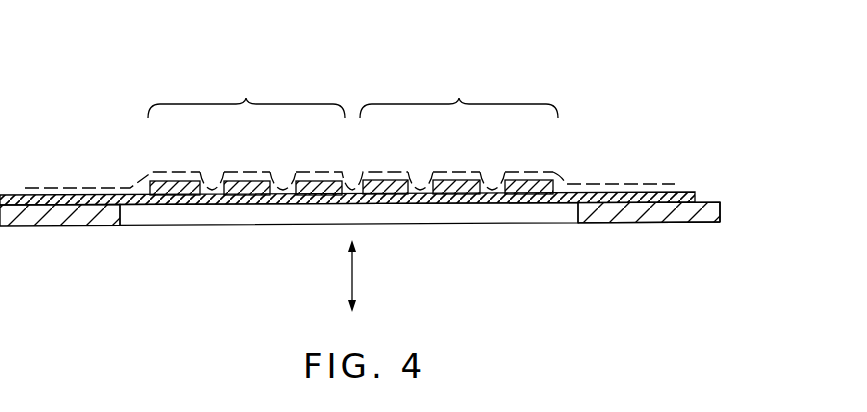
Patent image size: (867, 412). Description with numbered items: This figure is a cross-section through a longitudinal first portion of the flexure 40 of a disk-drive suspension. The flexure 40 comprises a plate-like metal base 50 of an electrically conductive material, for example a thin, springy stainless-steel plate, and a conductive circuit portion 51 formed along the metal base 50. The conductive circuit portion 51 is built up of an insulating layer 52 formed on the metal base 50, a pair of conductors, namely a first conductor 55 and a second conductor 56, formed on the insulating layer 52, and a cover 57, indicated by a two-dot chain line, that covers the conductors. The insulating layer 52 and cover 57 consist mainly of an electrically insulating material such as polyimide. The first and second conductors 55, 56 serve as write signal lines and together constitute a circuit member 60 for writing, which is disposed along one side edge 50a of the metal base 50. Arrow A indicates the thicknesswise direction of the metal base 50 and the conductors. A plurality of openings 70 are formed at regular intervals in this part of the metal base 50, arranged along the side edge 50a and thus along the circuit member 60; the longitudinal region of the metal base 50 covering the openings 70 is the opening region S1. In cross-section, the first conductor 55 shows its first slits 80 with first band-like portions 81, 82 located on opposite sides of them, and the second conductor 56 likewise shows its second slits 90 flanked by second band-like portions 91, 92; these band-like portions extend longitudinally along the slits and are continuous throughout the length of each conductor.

The flexure 40 is at (591, 234).
The metal base 50 is at (706, 201).
The one side edge of the metal base 50a is at (721, 213).
The conductive circuit portion 51 is at (606, 125).
The insulating layer 52 is at (98, 190).
The first conductor 55 is at (459, 94).
The second conductor 56 is at (246, 94).
The cover 57 is at (562, 176).
The circuit member for writing 60 is at (357, 86).
The openings 70 is at (229, 226).
The first slits 80 is at (420, 178).
The first band-like portion 81 is at (530, 180).
The first band-like portion 82 is at (383, 180).
The second slits 90 is at (209, 178).
The second band-like portion 91 is at (320, 181).
The second band-like portion 92 is at (172, 181).
The opening region S1 is at (161, 234).
The arrow A is at (354, 275).